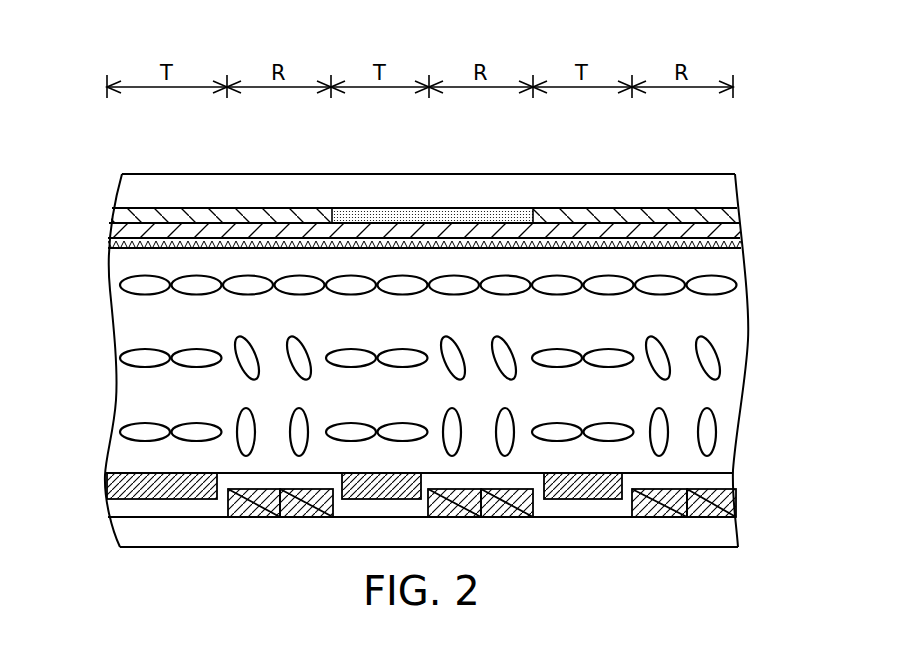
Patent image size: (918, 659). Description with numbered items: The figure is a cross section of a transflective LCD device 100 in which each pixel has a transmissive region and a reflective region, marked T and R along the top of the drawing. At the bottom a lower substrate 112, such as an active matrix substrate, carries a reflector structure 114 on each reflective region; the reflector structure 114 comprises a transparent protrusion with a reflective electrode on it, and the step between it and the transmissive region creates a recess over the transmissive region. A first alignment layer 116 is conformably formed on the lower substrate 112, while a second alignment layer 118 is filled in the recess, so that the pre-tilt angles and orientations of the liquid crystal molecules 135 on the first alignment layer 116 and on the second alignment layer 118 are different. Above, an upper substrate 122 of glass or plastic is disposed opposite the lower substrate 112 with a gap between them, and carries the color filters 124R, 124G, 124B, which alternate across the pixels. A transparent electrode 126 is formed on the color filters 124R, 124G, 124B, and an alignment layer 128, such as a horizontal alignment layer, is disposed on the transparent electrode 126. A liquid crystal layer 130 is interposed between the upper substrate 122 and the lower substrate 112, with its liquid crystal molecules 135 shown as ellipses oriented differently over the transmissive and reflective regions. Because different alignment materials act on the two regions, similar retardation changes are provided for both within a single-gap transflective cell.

The transflective LCD device 100 is at (78, 33).
The lower substrate 112 is at (725, 533).
The reflector structure 114 is at (722, 498).
The first alignment layer 116 is at (720, 480).
The second alignment layer 118 is at (613, 473).
The upper substrate 122 is at (722, 184).
The color filter 124R is at (238, 213).
The color filter 124G is at (427, 213).
The color filter 124B is at (722, 211).
The transparent electrode 126 is at (722, 236).
The alignment layer 128 is at (735, 250).
The liquid crystal layer 130 is at (733, 358).
The liquid crystal molecules 135 is at (720, 285).